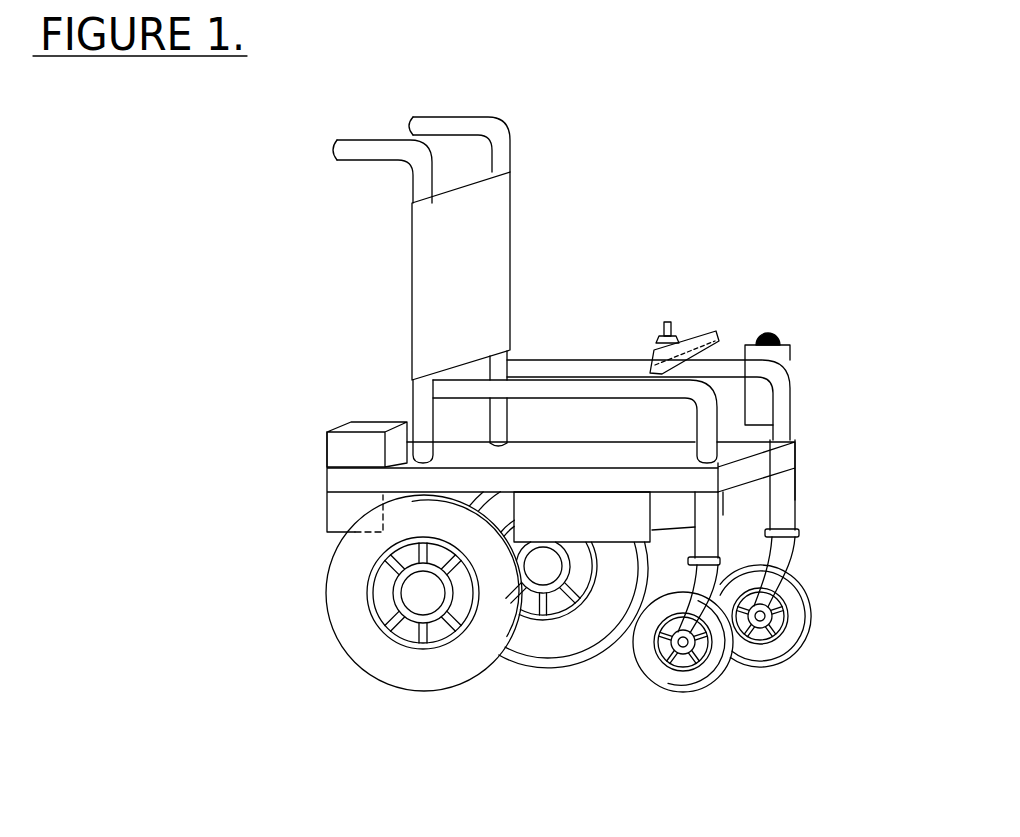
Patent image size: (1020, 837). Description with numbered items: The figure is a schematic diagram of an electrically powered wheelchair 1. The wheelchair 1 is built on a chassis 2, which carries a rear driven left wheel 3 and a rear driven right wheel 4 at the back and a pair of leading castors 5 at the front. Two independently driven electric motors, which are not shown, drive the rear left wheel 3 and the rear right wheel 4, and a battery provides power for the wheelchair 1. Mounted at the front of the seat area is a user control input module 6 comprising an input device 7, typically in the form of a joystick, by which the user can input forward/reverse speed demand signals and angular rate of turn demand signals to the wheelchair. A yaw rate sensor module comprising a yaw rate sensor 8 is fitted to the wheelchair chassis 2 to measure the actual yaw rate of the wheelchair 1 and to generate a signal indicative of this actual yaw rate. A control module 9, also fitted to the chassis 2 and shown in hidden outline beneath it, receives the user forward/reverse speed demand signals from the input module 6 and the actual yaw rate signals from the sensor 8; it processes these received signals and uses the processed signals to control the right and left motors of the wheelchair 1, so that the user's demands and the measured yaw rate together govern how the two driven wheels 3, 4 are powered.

The electrically powered wheelchair 1 is at (638, 129).
The chassis 2 is at (313, 480).
The rear driven left wheel 3 is at (595, 675).
The rear driven right wheel 4 is at (494, 689).
The leading castors 5 is at (740, 686).
The user control input module 6 is at (728, 328).
The input device 7 is at (675, 311).
The yaw rate sensor 8 is at (321, 420).
The control module 9 is at (311, 529).